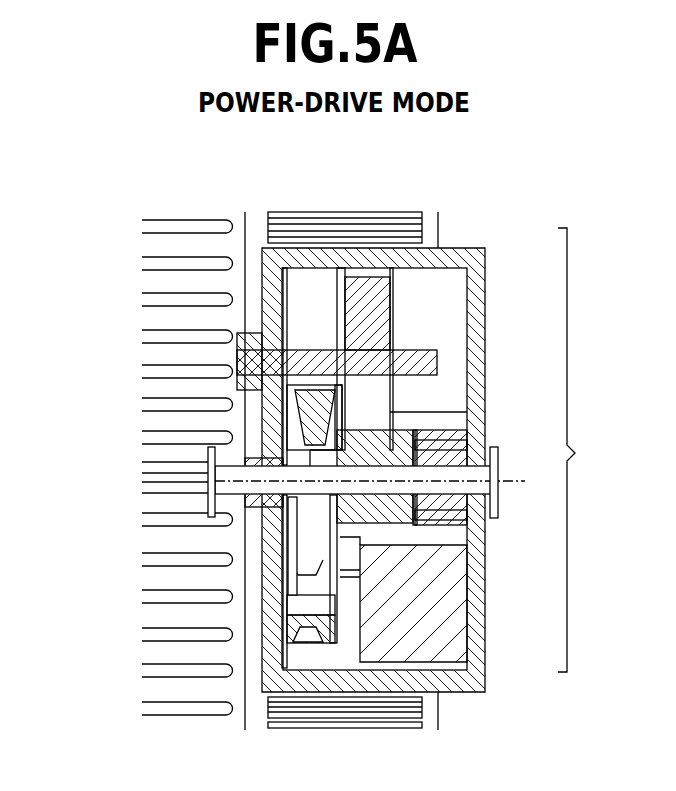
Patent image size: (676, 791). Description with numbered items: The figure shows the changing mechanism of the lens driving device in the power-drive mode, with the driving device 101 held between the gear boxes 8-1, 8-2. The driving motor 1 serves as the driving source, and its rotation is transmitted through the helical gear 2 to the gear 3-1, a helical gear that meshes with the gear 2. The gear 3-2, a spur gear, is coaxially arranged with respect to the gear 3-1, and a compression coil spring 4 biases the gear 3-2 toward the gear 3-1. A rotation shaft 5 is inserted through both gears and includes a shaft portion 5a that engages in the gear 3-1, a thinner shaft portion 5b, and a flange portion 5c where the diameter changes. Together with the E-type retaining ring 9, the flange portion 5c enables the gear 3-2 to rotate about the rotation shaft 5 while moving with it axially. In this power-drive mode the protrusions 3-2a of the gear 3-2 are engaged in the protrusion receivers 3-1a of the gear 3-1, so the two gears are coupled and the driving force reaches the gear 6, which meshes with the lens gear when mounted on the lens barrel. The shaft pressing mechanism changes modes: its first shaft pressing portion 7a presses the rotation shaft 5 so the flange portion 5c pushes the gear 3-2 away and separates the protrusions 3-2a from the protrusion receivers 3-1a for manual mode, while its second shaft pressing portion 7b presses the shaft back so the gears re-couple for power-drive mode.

The driving motor 1 is at (430, 637).
The gear 2 is at (270, 577).
The gear 3-1 is at (300, 435).
The protrusion receivers 3-1a is at (237, 350).
The gear 3-2 is at (398, 442).
The protrusions 3-2a is at (325, 500).
The compression coil spring 4 is at (457, 432).
The rotation shaft 5 is at (215, 490).
The shaft portion 5a is at (255, 500).
The shaft portion 5b is at (437, 465).
The flange portion 5c is at (410, 545).
The gear 6 is at (373, 323).
The first shaft pressing portion 7a is at (207, 448).
The second shaft pressing portion 7b is at (498, 497).
The gear box 8-1 is at (293, 257).
The gear box 8-2 is at (447, 260).
The E-type retaining ring 9 is at (425, 480).
The driving device 101 is at (589, 450).